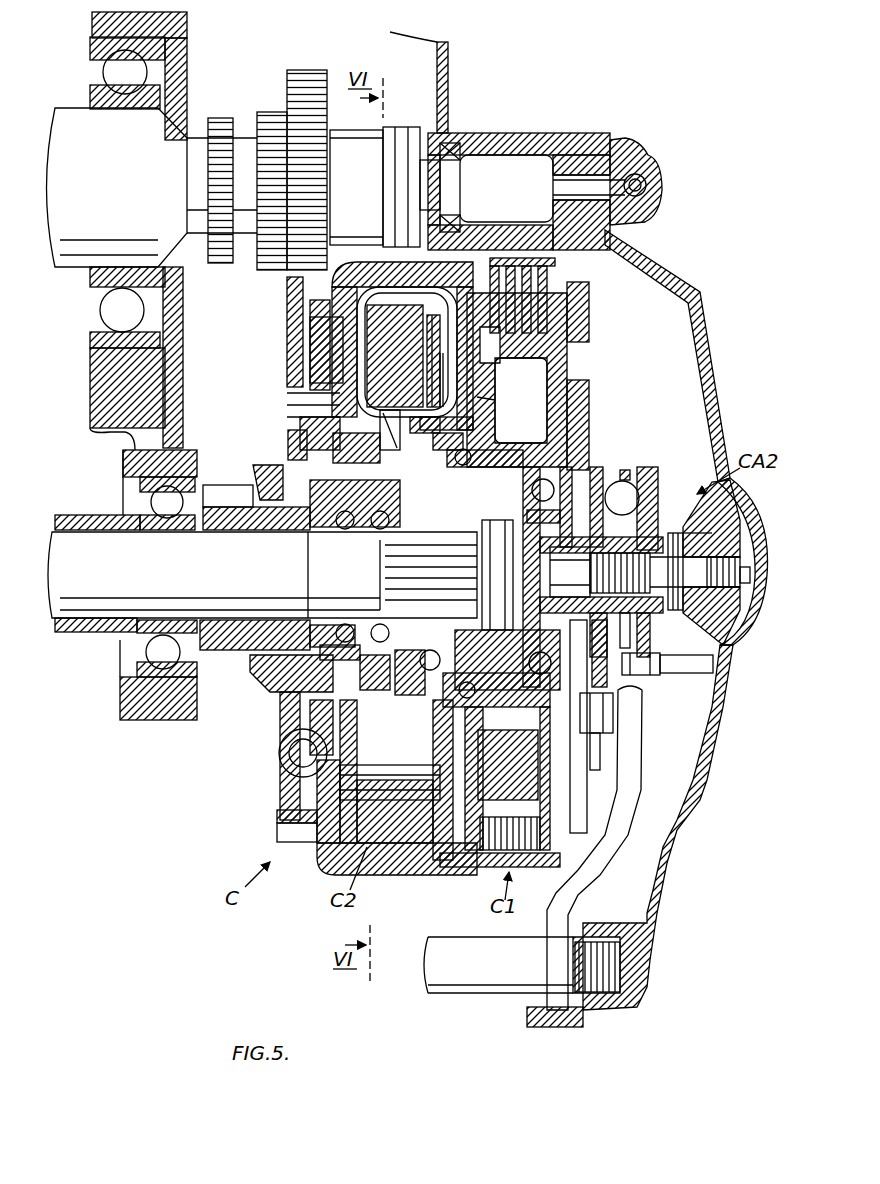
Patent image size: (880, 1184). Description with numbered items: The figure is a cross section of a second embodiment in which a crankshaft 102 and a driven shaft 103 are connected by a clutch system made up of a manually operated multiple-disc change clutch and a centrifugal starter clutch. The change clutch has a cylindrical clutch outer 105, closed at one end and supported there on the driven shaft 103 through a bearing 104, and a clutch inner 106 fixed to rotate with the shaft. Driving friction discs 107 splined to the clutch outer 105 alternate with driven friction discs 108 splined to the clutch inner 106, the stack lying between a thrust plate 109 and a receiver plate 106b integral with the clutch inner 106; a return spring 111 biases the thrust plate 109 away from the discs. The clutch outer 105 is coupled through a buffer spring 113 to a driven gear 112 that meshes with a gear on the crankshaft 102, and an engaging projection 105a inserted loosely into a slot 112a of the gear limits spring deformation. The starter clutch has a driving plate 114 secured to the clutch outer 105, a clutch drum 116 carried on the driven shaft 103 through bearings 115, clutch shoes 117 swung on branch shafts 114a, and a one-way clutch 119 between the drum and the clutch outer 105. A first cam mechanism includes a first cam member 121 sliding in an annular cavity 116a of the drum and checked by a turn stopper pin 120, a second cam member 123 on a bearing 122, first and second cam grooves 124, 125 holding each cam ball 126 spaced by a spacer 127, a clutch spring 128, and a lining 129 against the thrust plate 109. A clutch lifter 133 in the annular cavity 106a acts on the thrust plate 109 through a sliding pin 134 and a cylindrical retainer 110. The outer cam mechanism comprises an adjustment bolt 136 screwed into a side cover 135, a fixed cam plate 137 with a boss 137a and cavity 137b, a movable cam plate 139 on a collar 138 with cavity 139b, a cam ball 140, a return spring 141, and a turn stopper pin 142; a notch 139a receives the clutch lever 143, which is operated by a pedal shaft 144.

The crankshaft 102 is at (128, 187).
The driven shaft 103 is at (190, 583).
The bearing 104 is at (254, 522).
The clutch outer 105 is at (353, 265).
The engaging projection 105a is at (302, 373).
The clutch inner 106 is at (562, 380).
The annular cavity 106a is at (583, 400).
The receiver plate 106b is at (556, 297).
The driving friction discs 107 is at (520, 258).
The driven friction discs 108 is at (521, 400).
The thrust plate 109 is at (478, 258).
The cylindrical retainer 110 is at (547, 740).
The return spring 111 is at (540, 750).
The driven gear 112 is at (280, 832).
The slot 112a is at (300, 433).
The buffer spring 113 is at (282, 752).
The driving plate 114 is at (355, 333).
The branch shafts 114a is at (343, 847).
The bearings 115 is at (347, 522).
The clutch drum 116 is at (400, 840).
The annular cavity 116a is at (285, 725).
The clutch shoes 117 is at (373, 250).
The one-way clutch 119 is at (335, 470).
The turn stopper pin 120 is at (395, 440).
The first cam member 121 is at (383, 553).
The bearing 122 is at (447, 470).
The second cam member 123 is at (478, 400).
The first cam grooves 124 is at (405, 660).
The second cam grooves 125 is at (430, 672).
The cam ball 126 is at (390, 770).
The spacer 127 is at (408, 485).
The clutch spring 128 is at (477, 397).
The lining 129 is at (435, 322).
The clutch lifter 133 is at (580, 480).
The sliding pin 134 is at (490, 675).
The side cover 135 is at (712, 368).
The adjustment bolt 136 is at (750, 557).
The fixed cam plate 137 is at (648, 472).
The boss 137a is at (660, 530).
The cavity 137b is at (630, 470).
The collar 138 is at (624, 480).
The movable cam plate 139 is at (580, 495).
The notch 139a is at (600, 750).
The cavity 139b is at (570, 487).
The cam ball 140 is at (675, 530).
The return spring 141 is at (555, 540).
The turn stopper pin 142 is at (650, 675).
The clutch lever 143 is at (600, 865).
The pedal shaft 144 is at (463, 985).